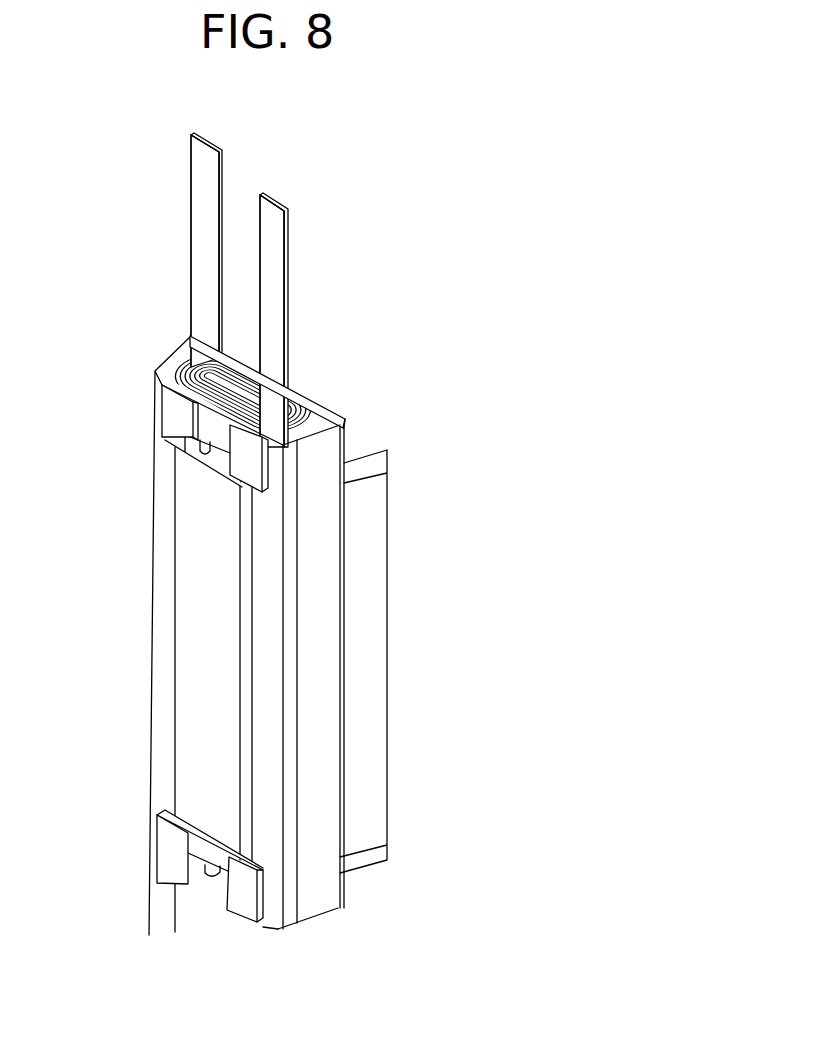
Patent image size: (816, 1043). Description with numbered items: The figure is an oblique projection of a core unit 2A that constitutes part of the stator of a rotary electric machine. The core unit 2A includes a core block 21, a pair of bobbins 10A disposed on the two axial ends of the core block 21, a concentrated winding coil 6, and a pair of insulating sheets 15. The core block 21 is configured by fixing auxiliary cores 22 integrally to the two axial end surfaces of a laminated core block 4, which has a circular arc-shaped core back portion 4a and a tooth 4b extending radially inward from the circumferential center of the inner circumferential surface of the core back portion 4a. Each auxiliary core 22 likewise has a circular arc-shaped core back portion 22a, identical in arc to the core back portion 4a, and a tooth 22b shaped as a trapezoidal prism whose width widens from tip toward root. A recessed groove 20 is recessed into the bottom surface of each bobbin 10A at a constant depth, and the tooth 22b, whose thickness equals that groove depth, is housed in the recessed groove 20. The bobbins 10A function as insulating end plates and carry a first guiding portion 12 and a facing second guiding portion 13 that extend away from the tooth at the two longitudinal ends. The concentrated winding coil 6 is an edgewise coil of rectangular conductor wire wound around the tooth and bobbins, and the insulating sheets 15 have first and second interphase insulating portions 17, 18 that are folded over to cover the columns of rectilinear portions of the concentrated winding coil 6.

The core unit 2A is at (78, 98).
The core block 4 is at (388, 597).
The core back portion 4a is at (370, 655).
The tooth 4b is at (190, 630).
The concentrated winding coil 6 is at (190, 352).
The bobbin 10A is at (327, 410).
The first guiding portion 12 is at (172, 405).
The second guiding portion 13 is at (303, 385).
The insulating sheet 15 is at (152, 707).
The first interphase insulating portion 17 is at (283, 925).
The second interphase insulating portion 18 is at (320, 910).
The recessed groove 20 is at (203, 440).
The core block 21 is at (397, 540).
The auxiliary core 22 is at (388, 452).
The core back portion 22a is at (357, 433).
The tooth 22b is at (192, 448).